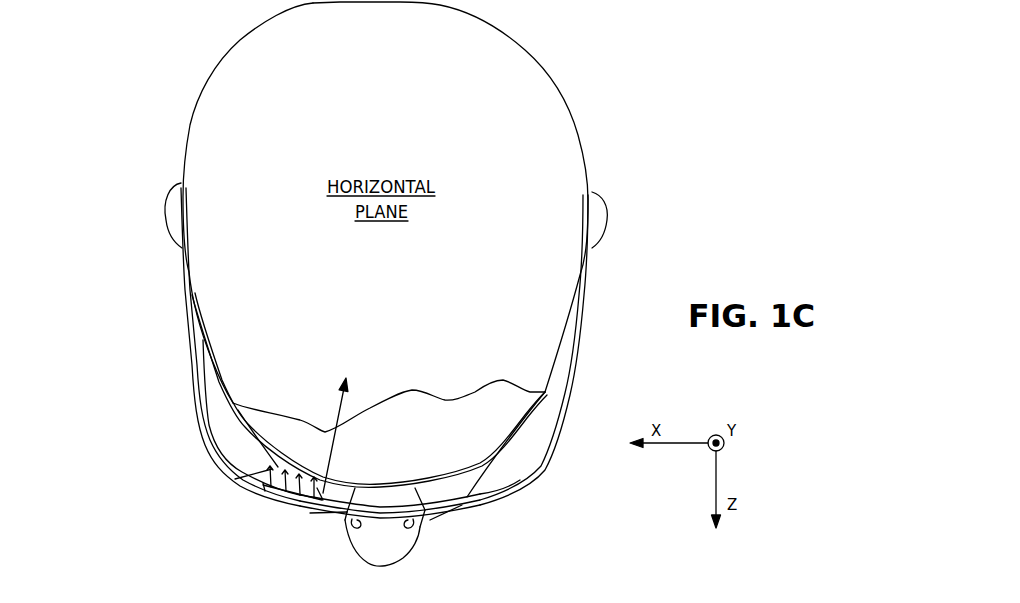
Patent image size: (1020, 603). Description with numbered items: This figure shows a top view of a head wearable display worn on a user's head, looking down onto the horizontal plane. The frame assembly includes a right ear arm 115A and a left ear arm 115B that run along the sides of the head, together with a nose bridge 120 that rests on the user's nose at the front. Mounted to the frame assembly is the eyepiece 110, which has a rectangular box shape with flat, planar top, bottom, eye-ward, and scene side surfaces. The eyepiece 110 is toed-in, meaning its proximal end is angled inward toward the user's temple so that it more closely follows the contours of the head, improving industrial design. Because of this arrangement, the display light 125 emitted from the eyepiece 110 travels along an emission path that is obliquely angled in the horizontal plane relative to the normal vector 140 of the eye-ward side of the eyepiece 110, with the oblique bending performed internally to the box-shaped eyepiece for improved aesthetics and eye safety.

The right ear arm 115A is at (190, 343).
The left ear arm 115B is at (585, 325).
The eyepiece 110 is at (300, 497).
The display light 125 is at (238, 479).
The nose bridge 120 is at (418, 527).
The normal vector 140 is at (340, 400).